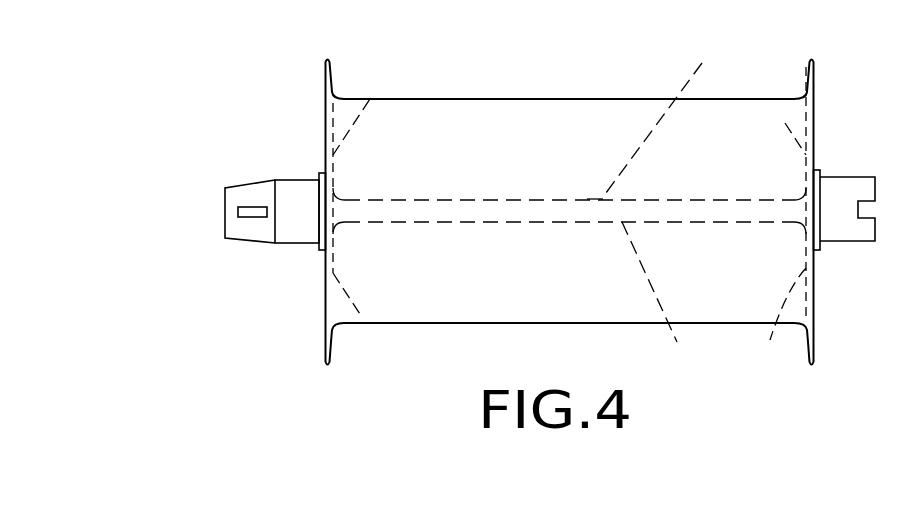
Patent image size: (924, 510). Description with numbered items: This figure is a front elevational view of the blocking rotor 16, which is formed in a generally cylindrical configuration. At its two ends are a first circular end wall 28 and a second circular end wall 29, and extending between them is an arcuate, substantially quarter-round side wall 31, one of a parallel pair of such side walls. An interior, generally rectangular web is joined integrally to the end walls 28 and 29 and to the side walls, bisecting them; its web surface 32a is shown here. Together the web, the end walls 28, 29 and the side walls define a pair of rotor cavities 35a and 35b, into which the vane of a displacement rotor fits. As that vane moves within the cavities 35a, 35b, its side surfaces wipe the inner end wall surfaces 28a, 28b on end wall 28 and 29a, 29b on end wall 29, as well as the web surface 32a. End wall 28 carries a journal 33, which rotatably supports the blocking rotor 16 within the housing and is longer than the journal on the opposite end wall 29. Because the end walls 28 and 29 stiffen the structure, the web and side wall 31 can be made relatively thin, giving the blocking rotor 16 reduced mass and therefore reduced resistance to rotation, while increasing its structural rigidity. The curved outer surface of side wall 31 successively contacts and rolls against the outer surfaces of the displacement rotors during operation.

The blocking rotor 16 is at (551, 206).
The first circular end wall 28 is at (324, 93).
The inner end wall surface 28a is at (372, 96).
The inner end wall surface 28b is at (365, 324).
The second circular end wall 29 is at (814, 311).
The inner end wall surface 29a is at (785, 123).
The inner end wall surface 29b is at (769, 323).
The side wall 31 is at (593, 99).
The web surface 32a is at (662, 114).
The journal 33 is at (292, 178).
The rotor cavity 35a is at (500, 118).
The rotor cavity 35b is at (667, 300).